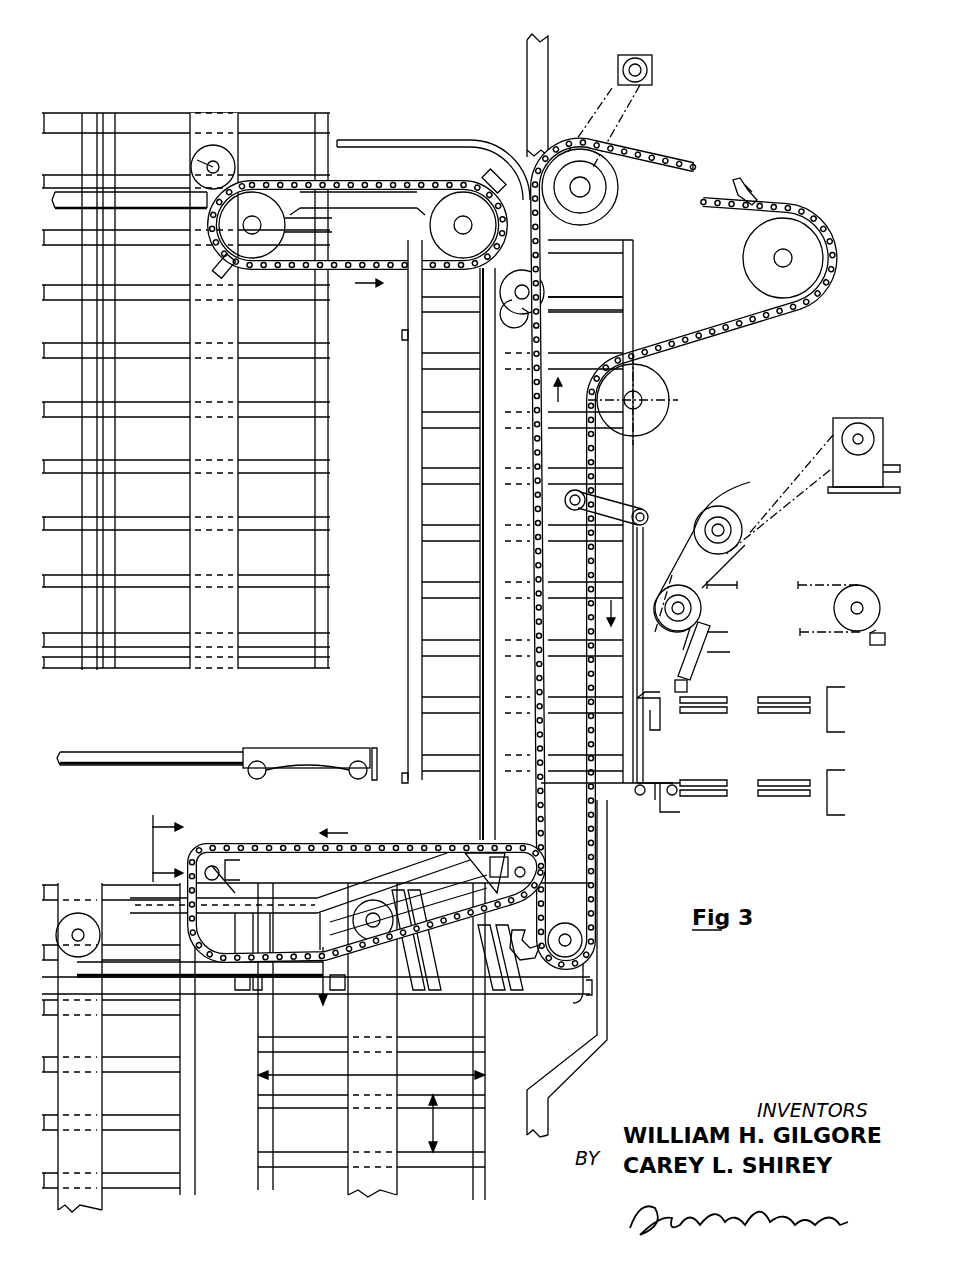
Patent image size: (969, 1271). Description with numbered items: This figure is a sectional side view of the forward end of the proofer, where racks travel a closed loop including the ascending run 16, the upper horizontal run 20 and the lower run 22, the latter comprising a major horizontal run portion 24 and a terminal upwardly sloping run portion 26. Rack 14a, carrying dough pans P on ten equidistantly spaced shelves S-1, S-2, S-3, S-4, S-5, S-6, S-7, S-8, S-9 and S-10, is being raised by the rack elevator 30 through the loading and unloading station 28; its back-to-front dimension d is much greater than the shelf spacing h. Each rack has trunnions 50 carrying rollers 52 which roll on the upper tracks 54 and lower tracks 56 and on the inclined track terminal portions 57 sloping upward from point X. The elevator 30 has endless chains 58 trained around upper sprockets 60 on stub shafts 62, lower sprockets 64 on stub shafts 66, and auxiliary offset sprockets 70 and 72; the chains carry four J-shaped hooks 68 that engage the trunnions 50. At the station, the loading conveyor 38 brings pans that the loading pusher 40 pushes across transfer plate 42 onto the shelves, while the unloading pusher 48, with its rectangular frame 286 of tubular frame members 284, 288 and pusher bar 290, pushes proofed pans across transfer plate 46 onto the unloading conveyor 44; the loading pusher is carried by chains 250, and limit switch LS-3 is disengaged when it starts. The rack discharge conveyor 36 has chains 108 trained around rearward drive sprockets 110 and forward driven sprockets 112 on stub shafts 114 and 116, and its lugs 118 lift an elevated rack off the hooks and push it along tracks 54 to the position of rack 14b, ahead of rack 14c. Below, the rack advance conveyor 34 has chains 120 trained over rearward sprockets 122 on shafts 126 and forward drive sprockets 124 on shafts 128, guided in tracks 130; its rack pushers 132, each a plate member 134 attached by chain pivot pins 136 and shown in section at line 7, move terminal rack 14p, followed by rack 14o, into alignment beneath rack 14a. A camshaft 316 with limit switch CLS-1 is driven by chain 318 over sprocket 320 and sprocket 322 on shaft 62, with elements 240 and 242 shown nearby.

The rack 14c is at (72, 113).
The rack 14b is at (253, 113).
The outboard roller 52 is at (196, 156).
The rack trunnion 50 is at (227, 165).
The endless chains 108 is at (341, 183).
The rack discharge conveyor 36 is at (368, 184).
The lugs 118 is at (488, 176).
The camshaft 316 is at (627, 55).
The limit switch CLS-1 is at (652, 62).
The chain 318 is at (607, 88).
The sprocket 320 is at (653, 68).
The sprocket 322 is at (612, 170).
The sprockets 60 is at (641, 160).
The rack elevator 30 is at (693, 167).
The stub shafts 62 is at (592, 188).
The J-shaped hooks 68 is at (752, 200).
The upper horizontal run 20 is at (121, 211).
The upper tracks 54 is at (179, 204).
The rearward drive sprockets 110 is at (293, 225).
The forward driven sprockets 112 is at (432, 210).
The stub shafts 114 is at (258, 229).
The stub shafts 116 is at (460, 229).
The top shelf S-1 is at (625, 243).
The auxiliary sprocket 70 is at (744, 259).
The shelf S-2 is at (617, 299).
The endless chains 58 is at (766, 309).
The shelf S-3 is at (447, 354).
The shelf S-4 is at (447, 413).
The ascending run 16 is at (386, 440).
The shelf S-5 is at (447, 469).
The rack 14a is at (408, 486).
The shelf S-6 is at (447, 526).
The shelf S-7 is at (447, 583).
The shelf S-8 is at (447, 641).
The shelf S-9 is at (447, 698).
The dough pans P is at (481, 692).
The bottom shelf S-10 is at (447, 756).
The auxiliary sprocket 72 is at (670, 400).
The loading and unloading station 28 is at (765, 474).
The motor 242 is at (861, 418).
The base 240 is at (851, 493).
The endless chains 250 is at (856, 575).
The limit switch LS-3 is at (862, 653).
The loading pusher 40 is at (692, 678).
The loading conveyor 38 is at (786, 690).
The transfer plate 42 is at (655, 720).
The unloading conveyor 44 is at (786, 773).
The transfer plate 46 is at (656, 796).
The tubular frame members 288 is at (72, 752).
The longitudinal tubular frame members 284 is at (125, 752).
The rectangular frame 286 is at (200, 727).
The unloading pusher 48 is at (278, 748).
The pusher bar 290 is at (378, 766).
The rearward driven sprockets 122 is at (214, 847).
The plate member 134 is at (232, 843).
The stub shafts 126 is at (206, 858).
The rack pushers 132 is at (247, 842).
The chain pivot pins 136 is at (249, 848).
The rack advance conveyor 34 is at (359, 845).
The endless chains 120 is at (391, 845).
The forward drive sprockets 124 is at (548, 862).
The stub shafts 128 is at (527, 873).
The section line 7 is at (156, 851).
The tracks 130 is at (213, 940).
The major horizontal run portion 24 is at (115, 965).
The lower run 22 is at (80, 968).
The lower tracks 56 is at (137, 968).
The point X is at (323, 989).
The terminal upwardly sloping run portion 26 is at (470, 927).
The inclined rack roller track terminal portions 57 is at (468, 927).
The sprockets 64 is at (575, 925).
The stub shafts 66 is at (572, 940).
The rack 14o is at (196, 1057).
The rack 14p is at (258, 1073).
The back-to-front dimension d is at (371, 1076).
The rack shelf spacing h is at (431, 1123).